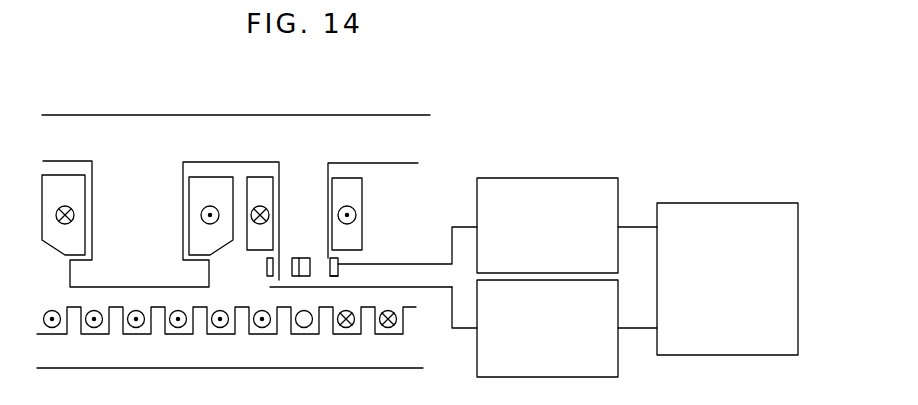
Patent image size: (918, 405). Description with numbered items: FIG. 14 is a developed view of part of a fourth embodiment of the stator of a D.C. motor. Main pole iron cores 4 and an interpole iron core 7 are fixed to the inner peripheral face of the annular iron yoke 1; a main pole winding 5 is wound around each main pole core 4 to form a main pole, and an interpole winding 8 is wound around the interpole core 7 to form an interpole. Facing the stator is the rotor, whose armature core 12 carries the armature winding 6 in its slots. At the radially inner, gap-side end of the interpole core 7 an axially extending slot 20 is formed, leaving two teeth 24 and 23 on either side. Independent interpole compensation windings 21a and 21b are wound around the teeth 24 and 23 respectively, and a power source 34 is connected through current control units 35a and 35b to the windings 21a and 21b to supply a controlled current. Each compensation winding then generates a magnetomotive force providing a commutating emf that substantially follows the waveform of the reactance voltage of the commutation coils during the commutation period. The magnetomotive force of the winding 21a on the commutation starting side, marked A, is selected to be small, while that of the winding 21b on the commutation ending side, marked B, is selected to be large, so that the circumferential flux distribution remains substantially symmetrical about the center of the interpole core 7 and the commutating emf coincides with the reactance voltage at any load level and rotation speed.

The iron yoke 1 is at (67, 123).
The main pole iron core 4 is at (155, 170).
The main pole winding 5 is at (46, 185).
The armature winding 6 is at (396, 321).
The interpole iron core 7 is at (302, 182).
The interpole winding 8 is at (264, 177).
The armature core 12 is at (413, 353).
The slot 20 is at (298, 277).
The interpole compensation winding 21a is at (274, 266).
The interpole compensation winding 21b is at (363, 262).
The tooth 23 is at (331, 277).
The tooth 24 is at (270, 287).
The power source 34 is at (699, 203).
The current control unit 35a is at (619, 358).
The current control unit 35b is at (563, 178).